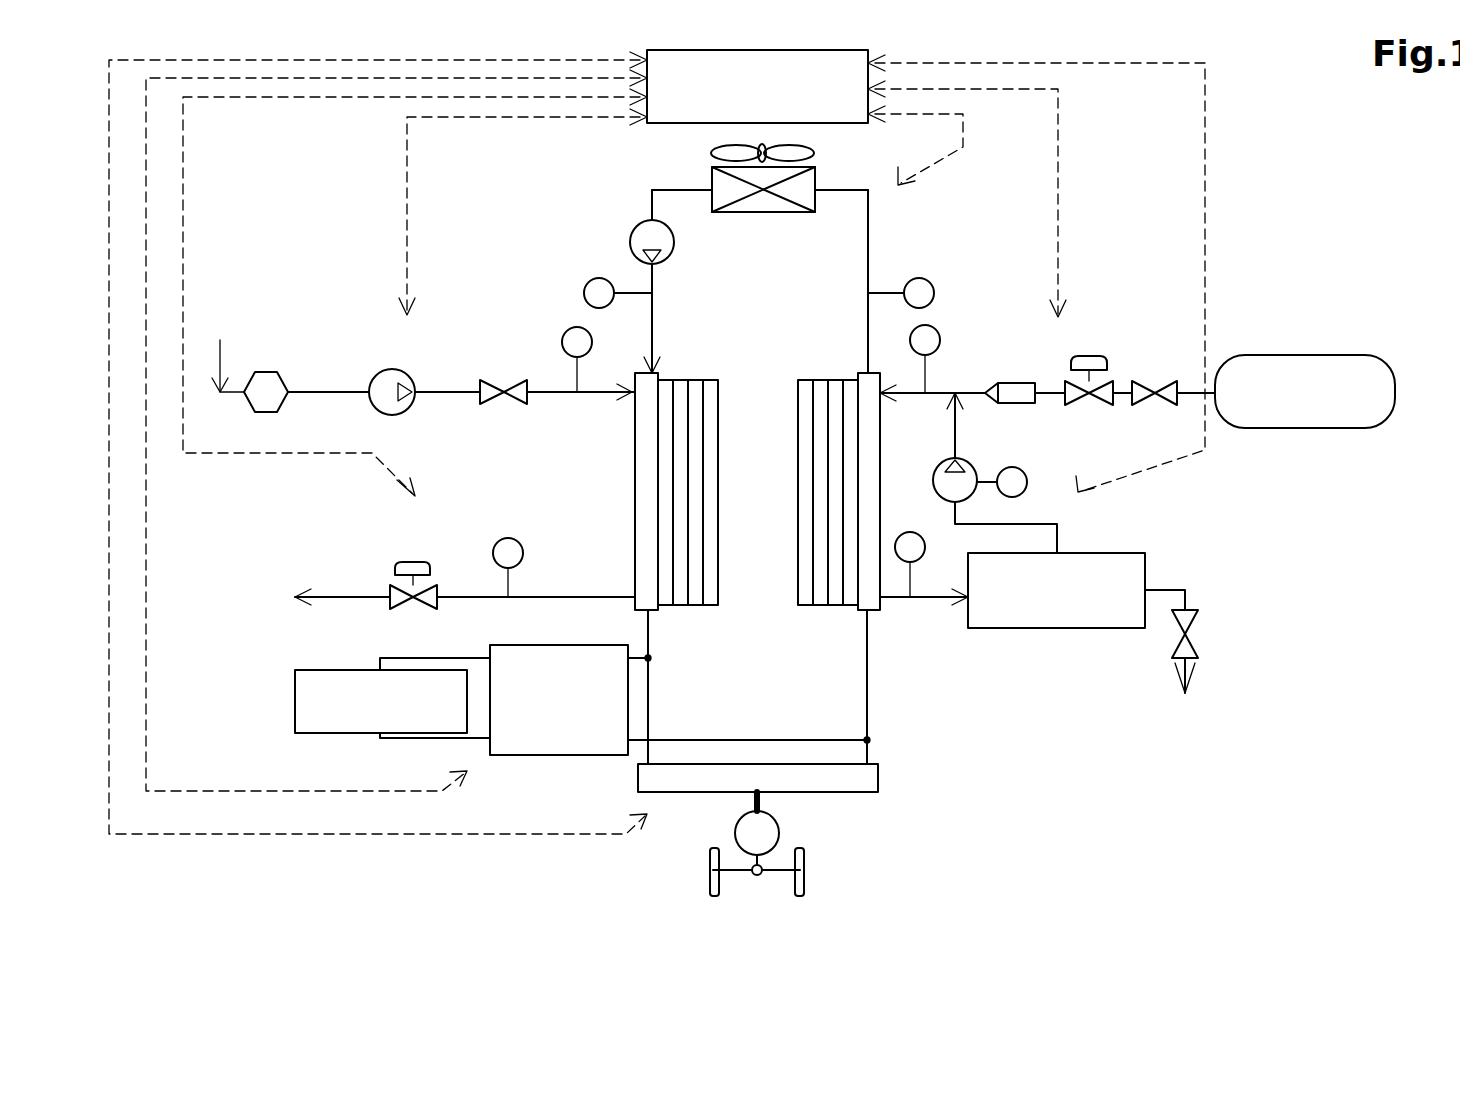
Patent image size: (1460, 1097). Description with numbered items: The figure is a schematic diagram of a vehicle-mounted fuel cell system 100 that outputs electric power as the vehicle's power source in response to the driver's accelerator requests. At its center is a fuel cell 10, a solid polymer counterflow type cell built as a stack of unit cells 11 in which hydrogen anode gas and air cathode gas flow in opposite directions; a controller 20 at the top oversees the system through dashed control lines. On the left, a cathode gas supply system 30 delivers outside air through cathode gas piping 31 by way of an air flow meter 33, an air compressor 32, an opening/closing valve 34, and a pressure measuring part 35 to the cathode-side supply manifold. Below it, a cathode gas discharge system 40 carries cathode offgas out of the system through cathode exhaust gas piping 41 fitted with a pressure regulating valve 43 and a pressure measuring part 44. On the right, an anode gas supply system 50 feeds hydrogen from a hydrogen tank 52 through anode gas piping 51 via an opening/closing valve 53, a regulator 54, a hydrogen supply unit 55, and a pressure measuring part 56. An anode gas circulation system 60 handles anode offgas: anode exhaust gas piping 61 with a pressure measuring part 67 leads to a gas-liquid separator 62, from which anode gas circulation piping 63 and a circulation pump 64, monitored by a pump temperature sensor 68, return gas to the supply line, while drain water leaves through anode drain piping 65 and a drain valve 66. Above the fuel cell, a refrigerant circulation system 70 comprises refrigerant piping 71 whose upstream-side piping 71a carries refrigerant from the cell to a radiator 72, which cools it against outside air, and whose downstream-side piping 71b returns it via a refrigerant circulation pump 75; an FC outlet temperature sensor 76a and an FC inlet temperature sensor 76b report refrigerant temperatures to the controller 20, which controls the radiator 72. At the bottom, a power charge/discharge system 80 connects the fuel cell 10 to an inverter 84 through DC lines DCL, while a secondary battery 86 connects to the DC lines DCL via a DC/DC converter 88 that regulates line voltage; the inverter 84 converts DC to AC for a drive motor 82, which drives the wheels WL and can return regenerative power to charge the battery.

The fuel cell system 100 is at (1300, 64).
The controller 20 is at (762, 51).
The fuel cell 10 is at (757, 470).
The unit cell 11 is at (693, 378).
The cathode gas supply system 30 is at (412, 336).
The cathode gas piping 31 is at (350, 400).
The air compressor 32 is at (392, 369).
The air flow meter 33 is at (274, 372).
The opening/closing valve 34 is at (495, 380).
The pressure measuring part 35 is at (568, 330).
The cathode gas discharge system 40 is at (431, 551).
The cathode exhaust gas piping 41 is at (356, 595).
The pressure regulating valve 43 is at (403, 561).
The pressure measuring part 44 is at (521, 544).
The anode gas supply system 50 is at (1137, 359).
The anode gas piping 51 is at (958, 392).
The hydrogen tank 52 is at (1276, 356).
The opening/closing valve 53 is at (1143, 380).
The regulator 54 is at (1086, 356).
The hydrogen supply unit 55 is at (1014, 382).
The pressure measuring part 56 is at (938, 333).
The anode gas circulation system 60 is at (1061, 564).
The anode exhaust gas piping 61 is at (922, 605).
The gas-liquid separator 62 is at (1025, 630).
The anode gas circulation piping 63 is at (1060, 540).
The circulation pump 64 is at (940, 467).
The anode drain piping 65 is at (1188, 602).
The drain valve 66 is at (1188, 640).
The pressure measuring part 67 is at (898, 532).
The pump temperature sensor 68 is at (1026, 478).
The refrigerant circulation system 70 is at (748, 251).
The refrigerant piping 71 is at (756, 281).
The upstream-side piping 71a is at (830, 281).
The downstream-side piping 71b is at (688, 193).
The radiator 72 is at (812, 166).
The refrigerant circulation pump 75 is at (630, 240).
The FC outlet temperature sensor 76a is at (914, 279).
The FC inlet temperature sensor 76b is at (590, 279).
The power charge/discharge system 80 is at (636, 753).
The drive motor 82 is at (780, 833).
The inverter 84 is at (878, 782).
The secondary battery 86 is at (328, 668).
The DC/DC converter 88 is at (558, 645).
The DC lines DCL is at (865, 703).
The wheels WL is at (805, 870).